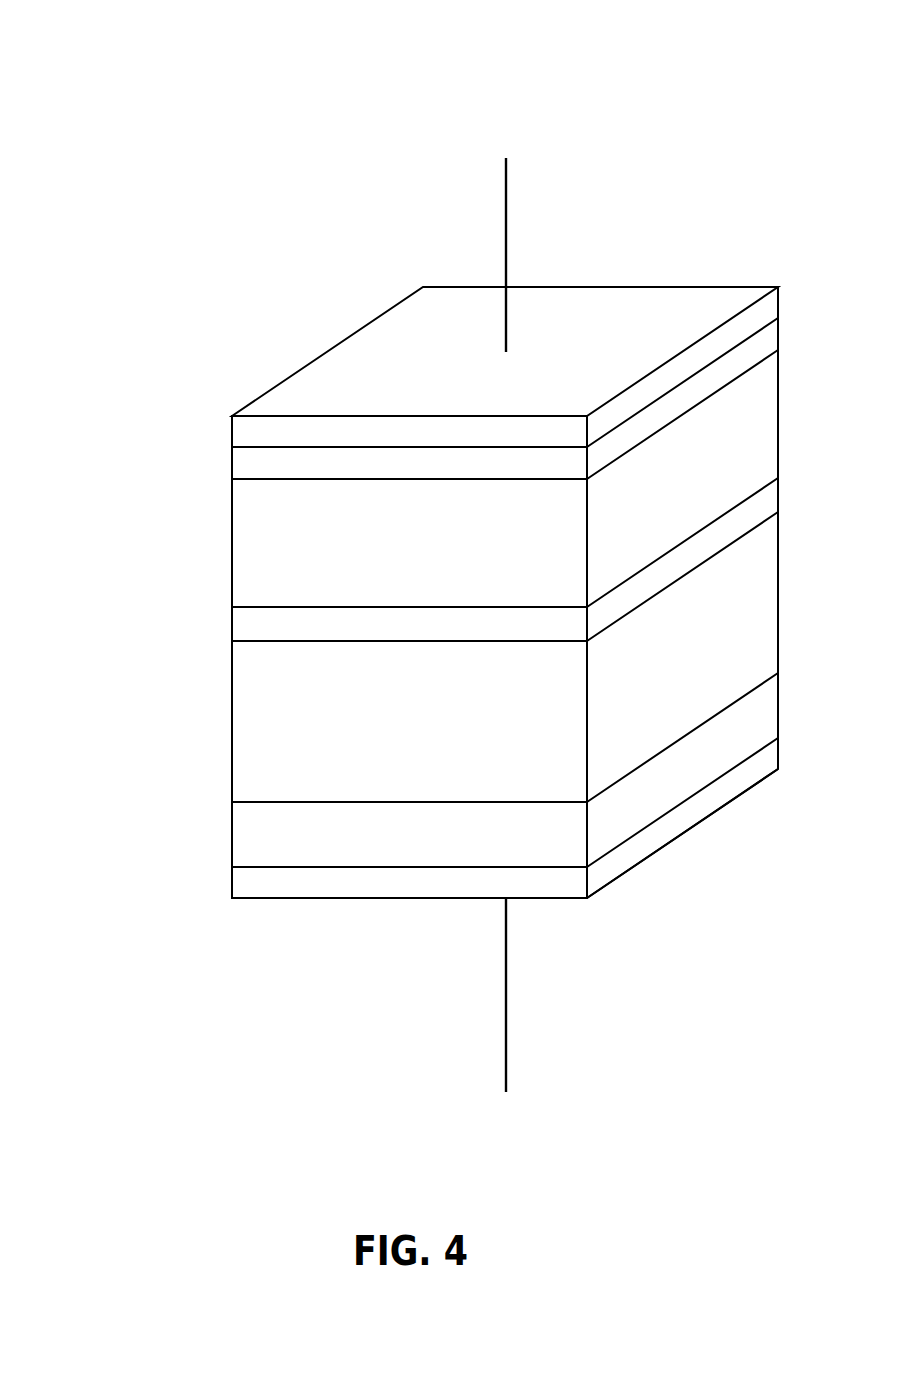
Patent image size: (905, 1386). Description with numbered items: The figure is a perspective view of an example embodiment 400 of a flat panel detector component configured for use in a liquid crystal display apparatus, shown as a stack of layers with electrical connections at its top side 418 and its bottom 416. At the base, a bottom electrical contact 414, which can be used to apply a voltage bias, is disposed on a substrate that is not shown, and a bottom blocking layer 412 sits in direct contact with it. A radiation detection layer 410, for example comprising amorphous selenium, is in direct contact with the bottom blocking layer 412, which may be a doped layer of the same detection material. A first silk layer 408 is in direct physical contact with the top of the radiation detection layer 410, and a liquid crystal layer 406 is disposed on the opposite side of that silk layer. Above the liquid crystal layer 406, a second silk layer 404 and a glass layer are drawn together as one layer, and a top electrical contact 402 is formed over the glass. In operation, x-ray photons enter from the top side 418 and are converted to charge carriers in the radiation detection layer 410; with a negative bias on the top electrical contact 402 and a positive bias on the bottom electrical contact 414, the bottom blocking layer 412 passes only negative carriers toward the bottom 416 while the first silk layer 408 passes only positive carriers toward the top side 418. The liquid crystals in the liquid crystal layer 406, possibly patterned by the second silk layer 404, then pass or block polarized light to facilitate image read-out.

The example embodiment 400 is at (160, 86).
The top electrical contact 402 is at (232, 432).
The second silk layer 404 is at (232, 463).
The liquid crystal layer 406 is at (232, 545).
The first silk layer 408 is at (232, 623).
The radiation detection layer 410 is at (232, 718).
The bottom blocking layer 412 is at (232, 833).
The bottom electrical contact 414 is at (232, 882).
The bottom 416 is at (467, 1132).
The top side 418 is at (476, 134).